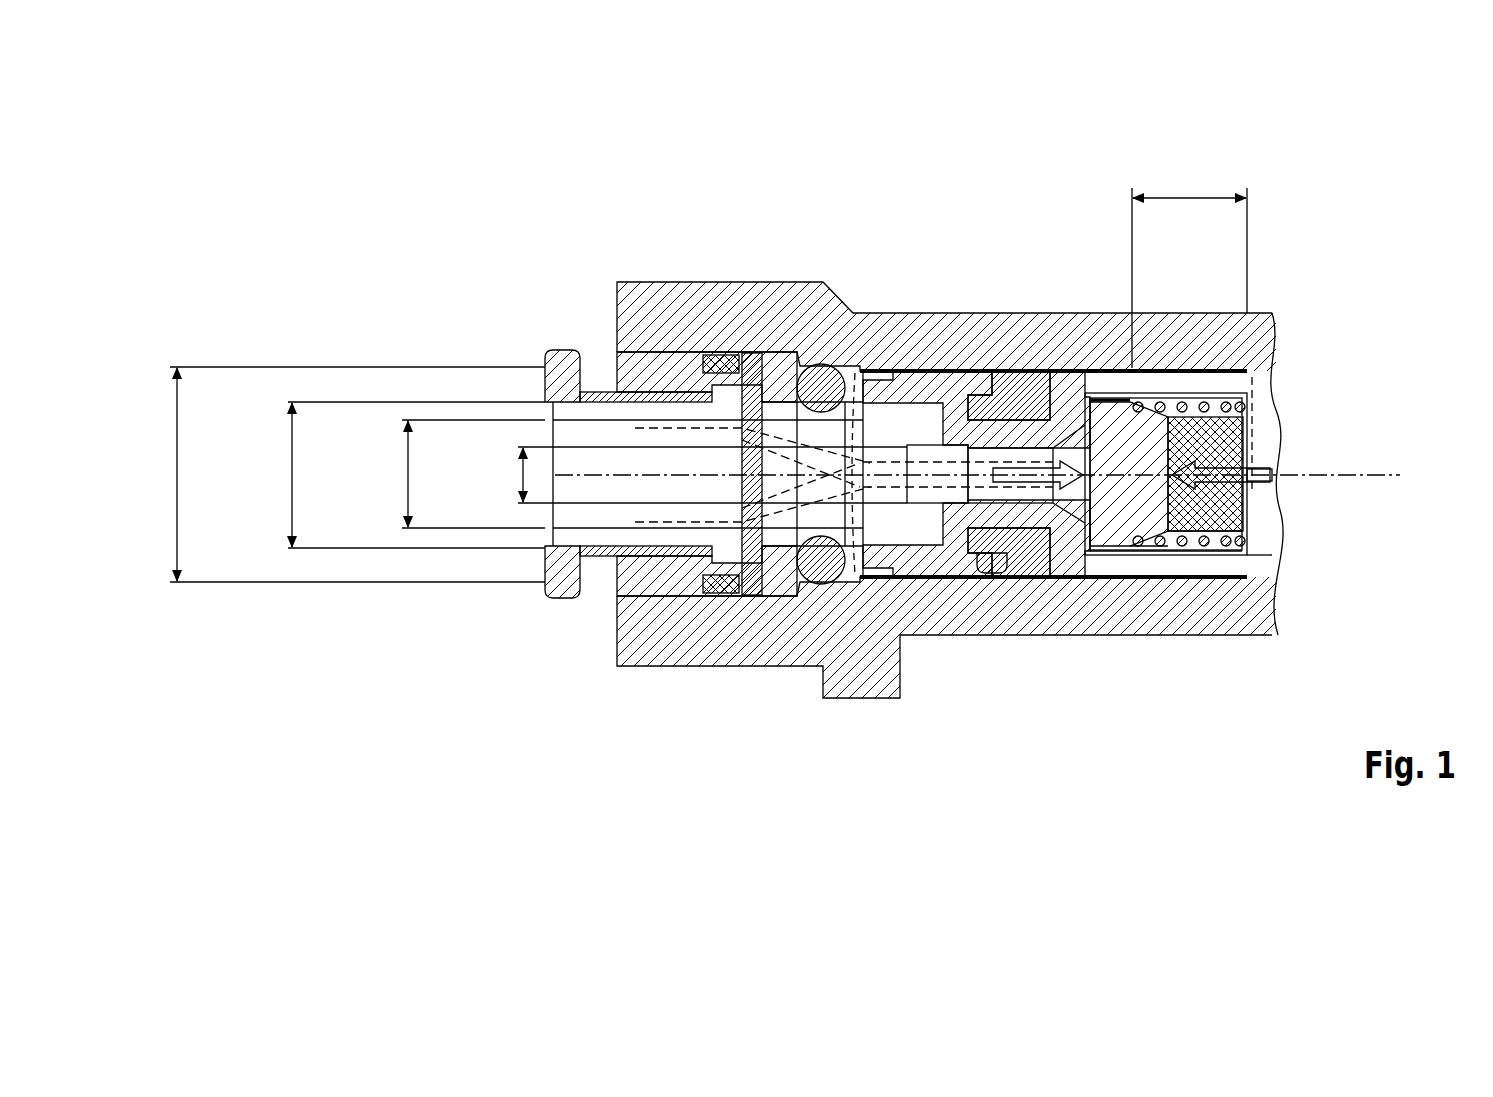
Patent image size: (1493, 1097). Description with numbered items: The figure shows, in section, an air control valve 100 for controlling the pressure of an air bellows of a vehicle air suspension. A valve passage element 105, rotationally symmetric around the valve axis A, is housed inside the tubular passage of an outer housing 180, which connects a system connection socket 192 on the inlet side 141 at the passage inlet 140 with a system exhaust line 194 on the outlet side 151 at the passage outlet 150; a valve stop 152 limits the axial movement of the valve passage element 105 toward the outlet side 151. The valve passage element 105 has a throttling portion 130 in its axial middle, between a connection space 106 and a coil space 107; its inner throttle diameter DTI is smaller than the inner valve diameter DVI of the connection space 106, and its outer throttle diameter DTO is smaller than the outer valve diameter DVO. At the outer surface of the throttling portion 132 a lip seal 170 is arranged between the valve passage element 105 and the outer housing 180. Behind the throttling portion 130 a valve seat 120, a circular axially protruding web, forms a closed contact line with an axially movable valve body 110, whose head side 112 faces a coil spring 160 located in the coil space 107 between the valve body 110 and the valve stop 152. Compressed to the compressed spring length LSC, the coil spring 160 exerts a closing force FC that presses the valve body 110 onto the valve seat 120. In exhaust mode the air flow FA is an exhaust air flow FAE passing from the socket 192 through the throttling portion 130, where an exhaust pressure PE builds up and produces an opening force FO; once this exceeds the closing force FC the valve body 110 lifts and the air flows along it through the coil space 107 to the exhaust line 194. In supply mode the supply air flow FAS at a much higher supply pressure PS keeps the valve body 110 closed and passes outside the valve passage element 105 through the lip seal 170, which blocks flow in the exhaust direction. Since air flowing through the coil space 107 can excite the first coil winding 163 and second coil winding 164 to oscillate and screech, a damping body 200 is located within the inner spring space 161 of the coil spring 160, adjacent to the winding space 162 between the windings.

The air control valve 100 is at (1324, 188).
The valve passage element 105 is at (945, 410).
The connection space 106 is at (915, 520).
The coil space 107 is at (1140, 565).
The valve body 110 is at (1108, 422).
The head side of the valve body 112 is at (1195, 393).
The valve seat 120 is at (1083, 540).
The throttling portion 130 is at (1013, 425).
The outer surface of the throttling portion 132 is at (1027, 520).
The passage inlet 140 is at (915, 425).
The inlet side 141 is at (761, 406).
The passage outlet 150 is at (1305, 400).
The outlet side 151 is at (1350, 424).
The valve stop 152 is at (1290, 371).
The coil spring 160 is at (1210, 398).
The inner spring space 161 is at (1222, 398).
The winding space between a first coil winding and a second coil winding 162 is at (1158, 560).
The first coil winding 163 is at (1203, 555).
The second coil winding 164 is at (1240, 555).
The lip seal 170 is at (972, 575).
The outer housing 180 is at (778, 303).
The system connection socket 192 is at (663, 362).
The system exhaust line 194 is at (1299, 495).
The damping body 200 is at (1232, 447).
The exhaust pressure PE is at (1030, 462).
The opening force FO is at (1055, 352).
The closing force FC is at (1278, 470).
The supply pressure PS is at (1291, 465).
The valve axis A is at (1386, 480).
The air flow FA is at (844, 598).
The supply air flow FAS is at (795, 500).
The exhaust air flow FAE is at (868, 492).
The compressed spring length LSC is at (1190, 196).
The outer valve diameter DVO is at (177, 475).
The inner valve diameter DVI is at (292, 475).
The outer throttle diameter DTO is at (408, 475).
The inner throttle diameter DTI is at (523, 475).